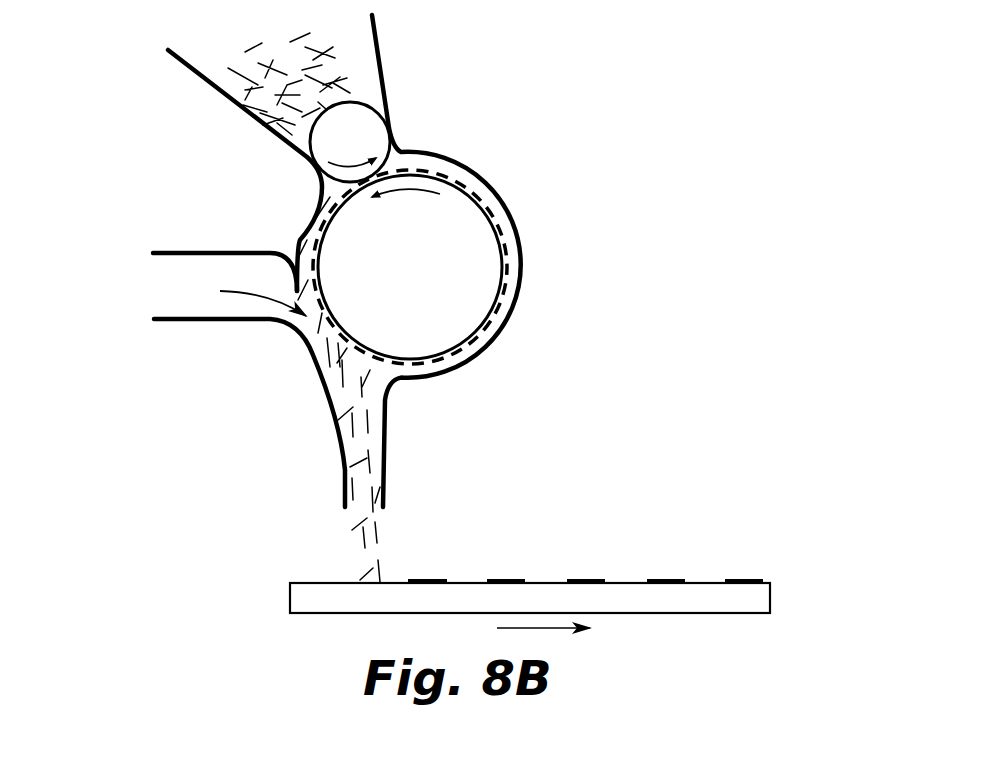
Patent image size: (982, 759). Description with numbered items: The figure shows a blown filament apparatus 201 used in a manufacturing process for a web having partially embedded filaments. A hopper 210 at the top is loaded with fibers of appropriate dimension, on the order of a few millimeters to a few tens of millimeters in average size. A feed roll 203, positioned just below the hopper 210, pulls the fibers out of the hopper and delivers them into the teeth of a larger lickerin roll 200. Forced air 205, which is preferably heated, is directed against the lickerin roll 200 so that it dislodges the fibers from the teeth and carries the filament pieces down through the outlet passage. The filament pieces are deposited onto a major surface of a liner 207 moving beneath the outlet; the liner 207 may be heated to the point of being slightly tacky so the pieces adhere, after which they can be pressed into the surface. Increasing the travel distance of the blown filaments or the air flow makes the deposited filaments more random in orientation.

The lickerin roll 200 is at (485, 257).
The blown filament apparatus 201 is at (642, 68).
The feed roll 203 is at (367, 127).
The forced air 205 is at (259, 295).
The liner 207 is at (757, 600).
The hopper 210 is at (357, 53).